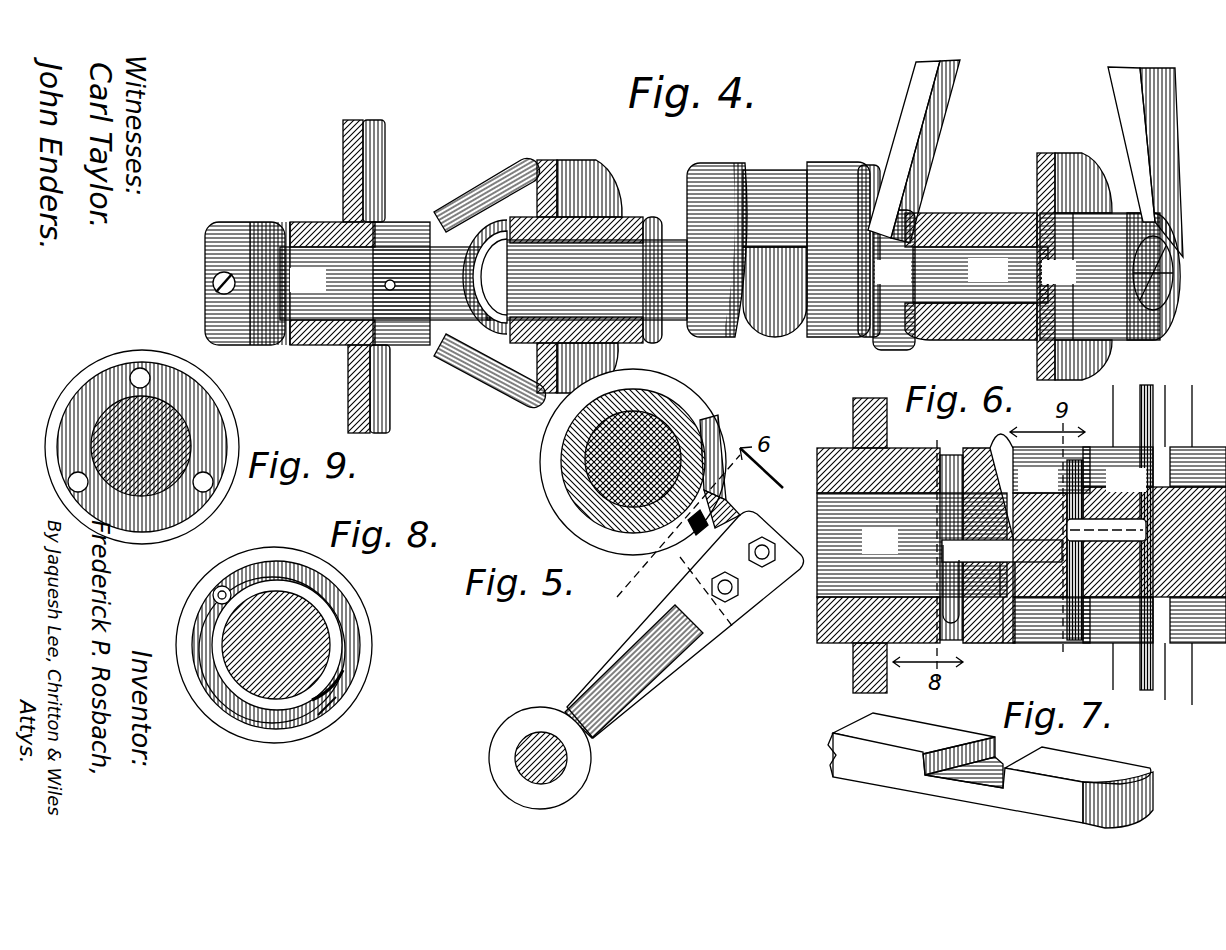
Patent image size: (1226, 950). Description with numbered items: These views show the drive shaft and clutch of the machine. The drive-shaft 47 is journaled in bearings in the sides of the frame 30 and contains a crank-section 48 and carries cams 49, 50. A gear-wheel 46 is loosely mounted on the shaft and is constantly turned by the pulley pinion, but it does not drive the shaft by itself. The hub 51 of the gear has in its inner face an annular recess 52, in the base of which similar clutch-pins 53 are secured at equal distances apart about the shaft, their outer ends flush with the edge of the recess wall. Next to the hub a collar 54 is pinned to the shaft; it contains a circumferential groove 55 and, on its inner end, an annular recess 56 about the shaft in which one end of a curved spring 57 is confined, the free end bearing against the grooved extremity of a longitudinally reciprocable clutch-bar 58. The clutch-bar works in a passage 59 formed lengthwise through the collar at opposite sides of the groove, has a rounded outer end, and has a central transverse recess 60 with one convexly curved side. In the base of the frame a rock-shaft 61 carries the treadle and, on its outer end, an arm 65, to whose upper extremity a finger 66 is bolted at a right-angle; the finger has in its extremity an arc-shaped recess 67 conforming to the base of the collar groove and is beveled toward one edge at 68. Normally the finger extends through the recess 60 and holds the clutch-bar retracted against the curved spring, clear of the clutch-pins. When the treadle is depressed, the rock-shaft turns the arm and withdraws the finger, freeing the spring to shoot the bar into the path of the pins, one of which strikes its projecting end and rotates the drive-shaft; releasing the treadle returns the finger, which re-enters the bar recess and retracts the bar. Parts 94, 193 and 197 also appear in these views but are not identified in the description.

In FIG. 4, the frame 30 is at (568, 228).
In FIG. 6, the frame 30 is at (878, 545).
In FIG. 4, the gear-wheel 46 is at (345, 153).
In FIG. 6, the gear-wheel 46 is at (1147, 398).
In FIG. 4, the drive-shaft 47 is at (664, 280).
In FIG. 9, the drive-shaft 47 is at (172, 432).
In FIG. 8, the drive-shaft 47 is at (302, 641).
In FIG. 5, the drive-shaft 47 is at (605, 445).
In FIG. 6, the drive-shaft 47 is at (912, 545).
In FIG. 4, the crank-section 48 is at (780, 185).
In FIG. 4, the cam 49 is at (894, 280).
In FIG. 4, the cam 50 is at (1100, 276).
In FIG. 9, the hub 51 is at (80, 392).
In FIG. 6, the hub 51 is at (1169, 545).
In FIG. 9, the annular recess 52 is at (132, 518).
In FIG. 6, the annular recess 52 is at (1085, 620).
In FIG. 9, the clutch-pins 53 is at (137, 376).
In FIG. 6, the clutch-pins 53 is at (1108, 520).
In FIG. 4, the collar 54 is at (400, 238).
In FIG. 6, the collar 54 is at (1051, 545).
In FIG. 4, the circumferential groove 55 is at (446, 224).
In FIG. 5, the circumferential groove 55 is at (560, 495).
In FIG. 6, the circumferential groove 55 is at (1010, 458).
In FIG. 4, the annular recess 56 is at (495, 236).
In FIG. 6, the annular recess 56 is at (962, 642).
In FIG. 4, the curved spring 57 is at (480, 278).
In FIG. 8, the curved spring 57 is at (287, 713).
In FIG. 6, the curved spring 57 is at (942, 600).
In FIG. 8, the clutch-bar 58 is at (330, 690).
In FIG. 5, the clutch-bar 58 is at (698, 532).
In FIG. 6, the clutch-bar 58 is at (1002, 581).
In FIG. 7, the clutch-bar 58 is at (1115, 771).
In FIG. 8, the passage 59 is at (346, 679).
In FIG. 6, the passage 59 is at (1062, 598).
In FIG. 5, the central transverse recess 60 is at (545, 450).
In FIG. 6, the central transverse recess 60 is at (990, 552).
In FIG. 7, the central transverse recess 60 is at (975, 765).
In FIG. 5, the rock-shaft 61 is at (530, 752).
In FIG. 5, the arm 65 is at (670, 682).
In FIG. 5, the finger 66 is at (690, 550).
In FIG. 6, the finger 66 is at (1003, 610).
In FIG. 5, the arc-shaped recess 67 is at (706, 455).
In FIG. 5, the bevel 68 is at (718, 482).
In FIG. 6, the bevel 68 is at (990, 447).
In FIG. 4, the lever 94 is at (900, 138).
In FIG. 4, the lever 193 is at (1128, 130).
In FIG. 4, the pin 197 is at (1162, 290).